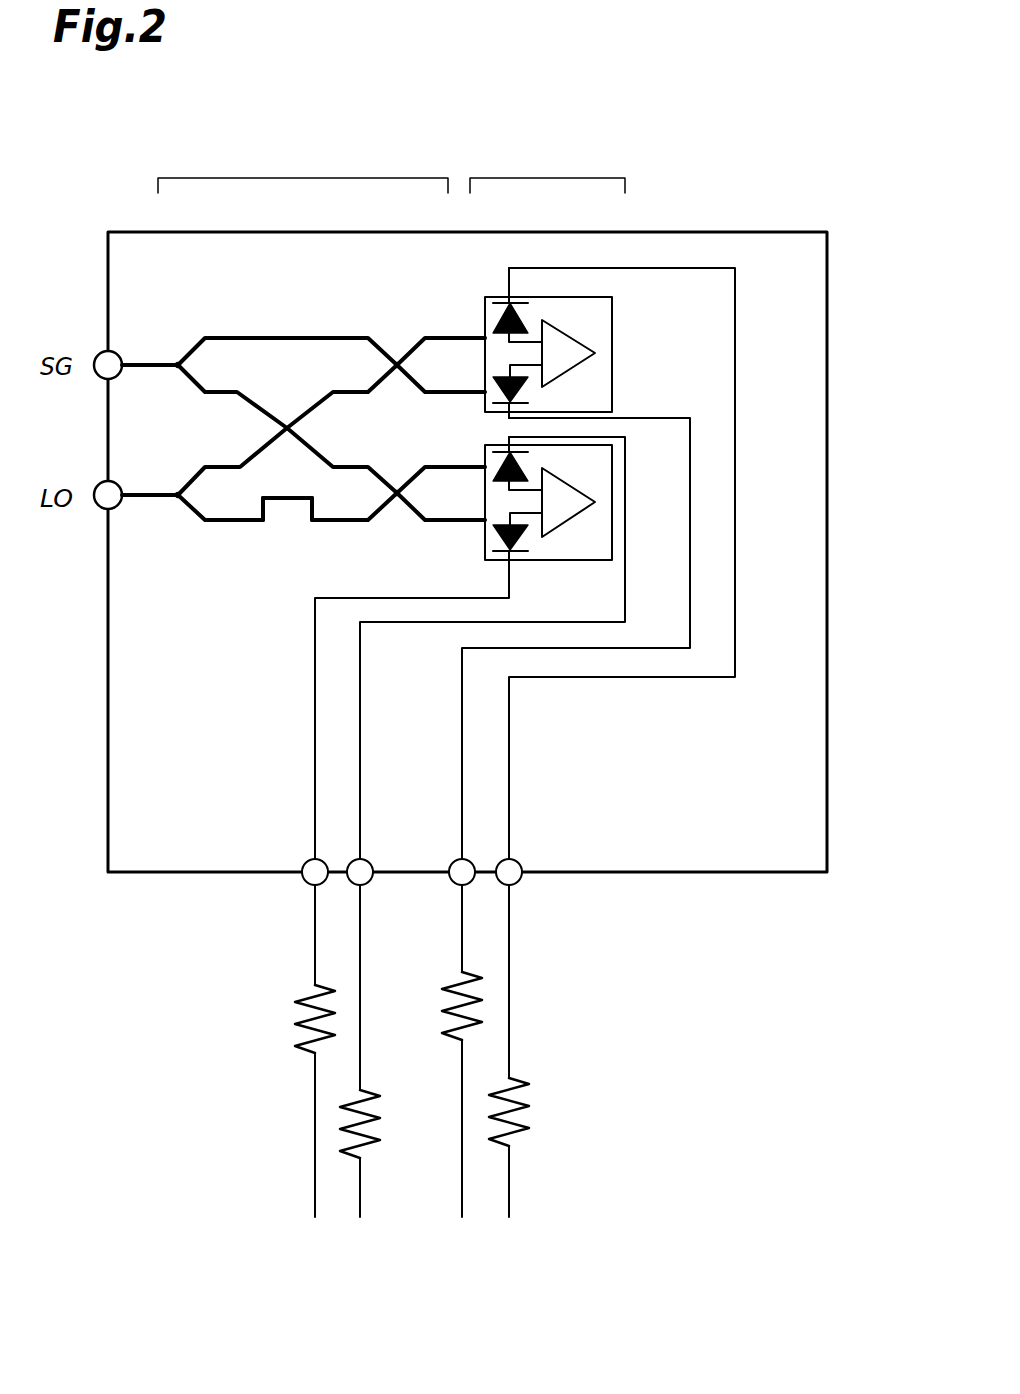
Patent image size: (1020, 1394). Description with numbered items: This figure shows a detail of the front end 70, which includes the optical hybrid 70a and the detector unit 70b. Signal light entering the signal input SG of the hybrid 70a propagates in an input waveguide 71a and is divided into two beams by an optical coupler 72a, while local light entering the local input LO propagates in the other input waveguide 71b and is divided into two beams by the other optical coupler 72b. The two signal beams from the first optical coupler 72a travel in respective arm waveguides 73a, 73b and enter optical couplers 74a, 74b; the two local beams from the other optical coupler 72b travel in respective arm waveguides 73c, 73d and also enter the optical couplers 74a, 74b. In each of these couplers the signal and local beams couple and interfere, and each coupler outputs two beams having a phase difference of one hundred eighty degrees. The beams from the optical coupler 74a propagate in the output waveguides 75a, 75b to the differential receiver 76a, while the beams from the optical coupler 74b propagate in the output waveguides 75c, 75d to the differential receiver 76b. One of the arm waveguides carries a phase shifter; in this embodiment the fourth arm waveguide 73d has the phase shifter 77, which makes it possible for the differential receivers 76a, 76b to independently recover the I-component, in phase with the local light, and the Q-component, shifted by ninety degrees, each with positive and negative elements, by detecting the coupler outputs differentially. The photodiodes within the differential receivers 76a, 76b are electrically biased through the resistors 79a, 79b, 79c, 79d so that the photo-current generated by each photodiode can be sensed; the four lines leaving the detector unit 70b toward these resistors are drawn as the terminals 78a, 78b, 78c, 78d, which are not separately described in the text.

The front end 70 is at (674, 151).
The optical hybrid 70a is at (303, 167).
The detector unit 70b is at (547, 167).
The input waveguide 71a is at (135, 362).
The input waveguide 71b is at (140, 499).
The optical coupler 72a is at (172, 357).
The optical coupler 72b is at (172, 492).
The arm waveguide 73a is at (247, 337).
The arm waveguide 73b is at (228, 387).
The arm waveguide 73c is at (230, 463).
The arm waveguide 73d is at (228, 523).
The optical coupler 74a is at (397, 350).
The optical coupler 74b is at (397, 490).
The output waveguide 75a is at (447, 333).
The output waveguide 75b is at (435, 390).
The output waveguide 75c is at (447, 465).
The output waveguide 75d is at (435, 525).
The differential receiver 76a is at (612, 302).
The differential receiver 76b is at (547, 561).
The phase shifter 77 is at (283, 497).
The output terminal 78a is at (314, 947).
The output terminal 78b is at (362, 935).
The output terminal 78c is at (462, 960).
The output terminal 78d is at (509, 945).
The resistor 79a is at (312, 1003).
The resistor 79b is at (378, 1110).
The resistor 79c is at (460, 1010).
The resistor 79d is at (528, 1100).